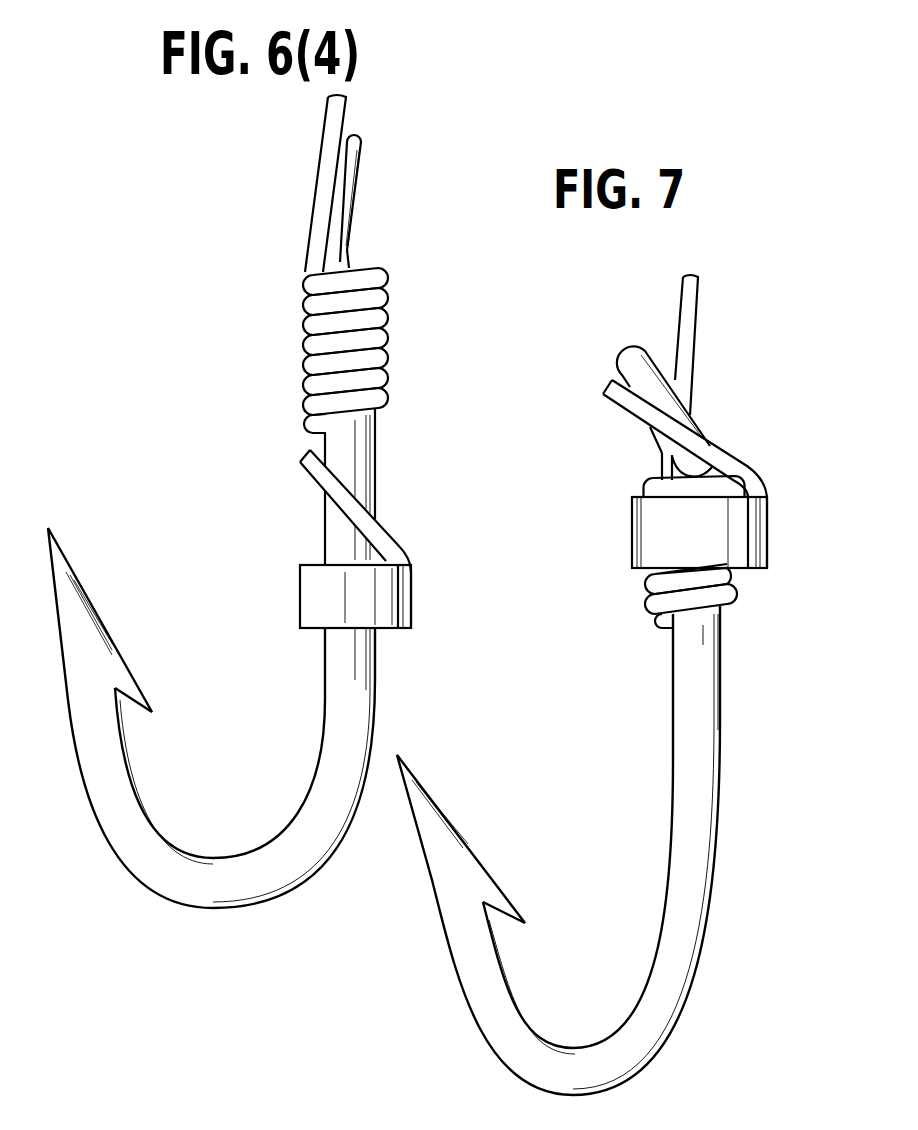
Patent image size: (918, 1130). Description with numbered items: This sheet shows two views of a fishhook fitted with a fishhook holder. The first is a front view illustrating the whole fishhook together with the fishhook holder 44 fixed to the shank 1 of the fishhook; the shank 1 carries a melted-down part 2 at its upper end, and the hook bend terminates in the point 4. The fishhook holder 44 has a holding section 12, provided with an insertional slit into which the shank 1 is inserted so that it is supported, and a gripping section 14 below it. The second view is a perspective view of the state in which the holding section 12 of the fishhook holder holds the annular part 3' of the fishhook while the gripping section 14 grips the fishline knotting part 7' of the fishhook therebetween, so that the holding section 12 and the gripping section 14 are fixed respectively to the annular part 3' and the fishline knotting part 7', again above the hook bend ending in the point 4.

In FIG. 64, the shank 1 is at (323, 750).
In FIG. 64, the melted-down part 2 is at (350, 157).
In FIG. 64, the point 4 is at (112, 658).
In FIG. 7, the point 4 is at (462, 842).
In FIG. 64, the holding section 12 is at (390, 543).
In FIG. 7, the holding section 12 is at (708, 452).
In FIG. 64, the gripping section 14 is at (403, 612).
In FIG. 7, the gripping section 14 is at (670, 538).
In FIG. 64, the fishhook holder 44 is at (293, 570).
In FIG. 7, the annular part 3' is at (641, 381).
In FIG. 7, the fishline knotting part 7' is at (656, 552).